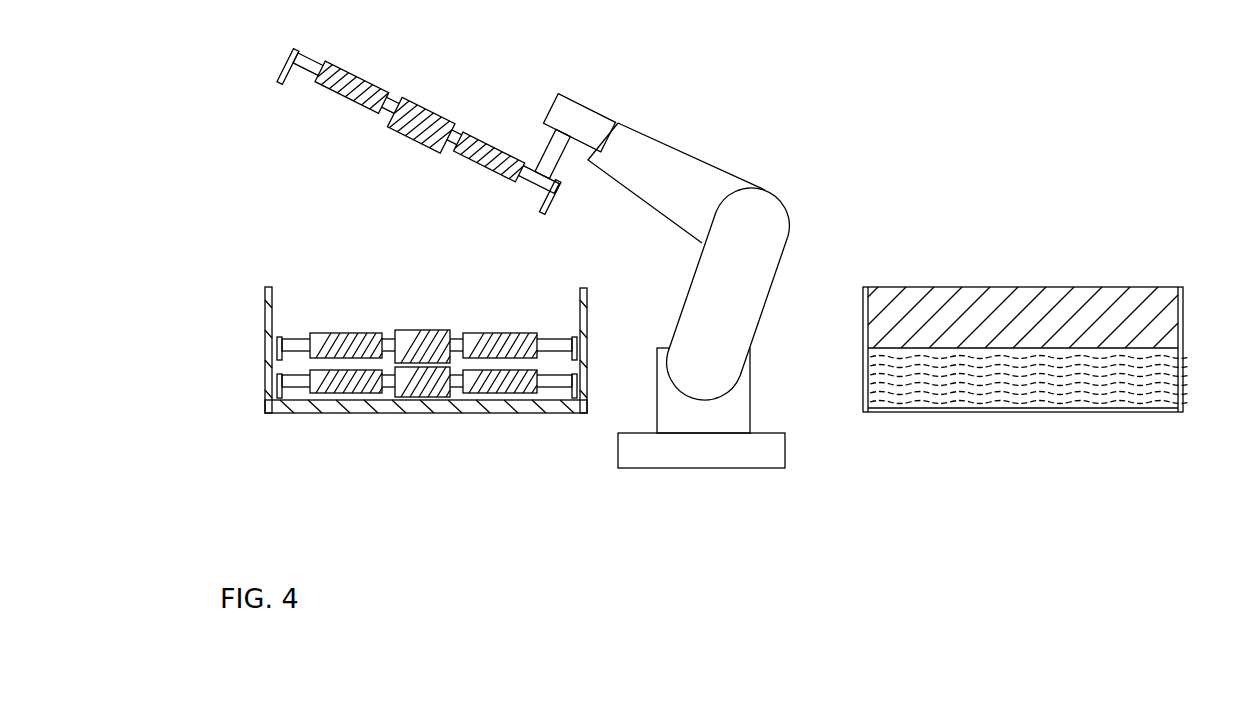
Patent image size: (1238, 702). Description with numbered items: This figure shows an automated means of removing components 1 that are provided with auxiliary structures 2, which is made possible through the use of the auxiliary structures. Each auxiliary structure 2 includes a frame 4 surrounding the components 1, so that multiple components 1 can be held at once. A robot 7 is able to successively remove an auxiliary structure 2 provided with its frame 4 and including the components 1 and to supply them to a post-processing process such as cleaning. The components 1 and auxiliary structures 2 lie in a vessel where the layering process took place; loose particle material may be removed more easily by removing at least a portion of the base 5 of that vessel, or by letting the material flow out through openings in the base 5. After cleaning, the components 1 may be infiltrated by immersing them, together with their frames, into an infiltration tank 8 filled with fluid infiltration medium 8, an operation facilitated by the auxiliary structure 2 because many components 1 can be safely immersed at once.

The component 1 is at (353, 72).
The auxiliary structure 2 is at (310, 56).
The frame 4 is at (265, 310).
The base 5 is at (432, 412).
The robot 7 is at (682, 157).
The infiltration tank 8 is at (1122, 288).